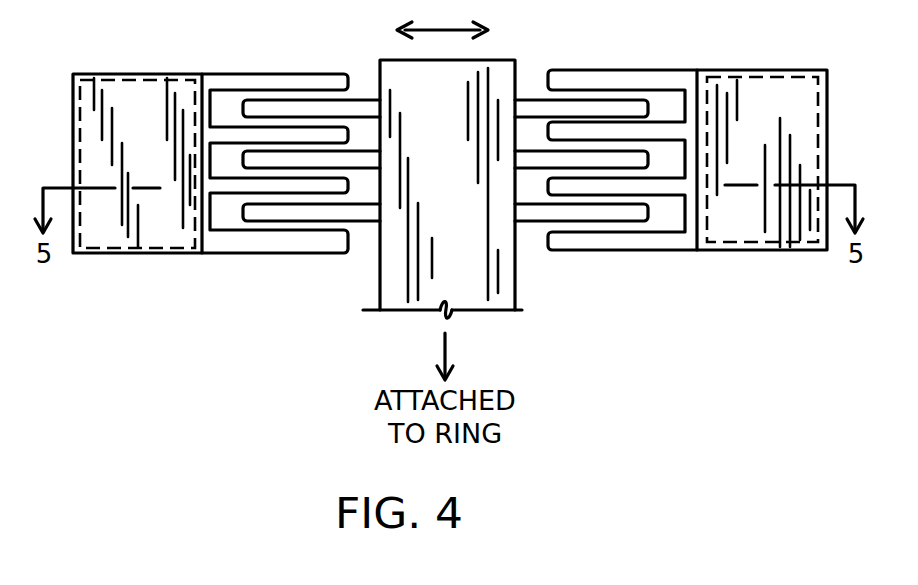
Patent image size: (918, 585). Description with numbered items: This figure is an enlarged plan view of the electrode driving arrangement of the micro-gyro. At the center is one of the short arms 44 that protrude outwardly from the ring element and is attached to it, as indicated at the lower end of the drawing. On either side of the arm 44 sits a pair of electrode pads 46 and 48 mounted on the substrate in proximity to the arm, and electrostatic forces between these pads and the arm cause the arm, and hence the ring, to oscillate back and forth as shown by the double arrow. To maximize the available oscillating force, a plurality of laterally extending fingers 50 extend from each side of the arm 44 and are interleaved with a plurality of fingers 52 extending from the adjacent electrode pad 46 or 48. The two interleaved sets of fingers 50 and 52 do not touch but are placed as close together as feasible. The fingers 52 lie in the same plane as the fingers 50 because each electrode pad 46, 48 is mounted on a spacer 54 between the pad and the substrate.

The arm 44 is at (460, 245).
The electrode pad 46 is at (140, 117).
The electrode pad 48 is at (767, 107).
The fingers 50 is at (312, 112).
The fingers 52 is at (243, 133).
The spacer 54 is at (157, 250).